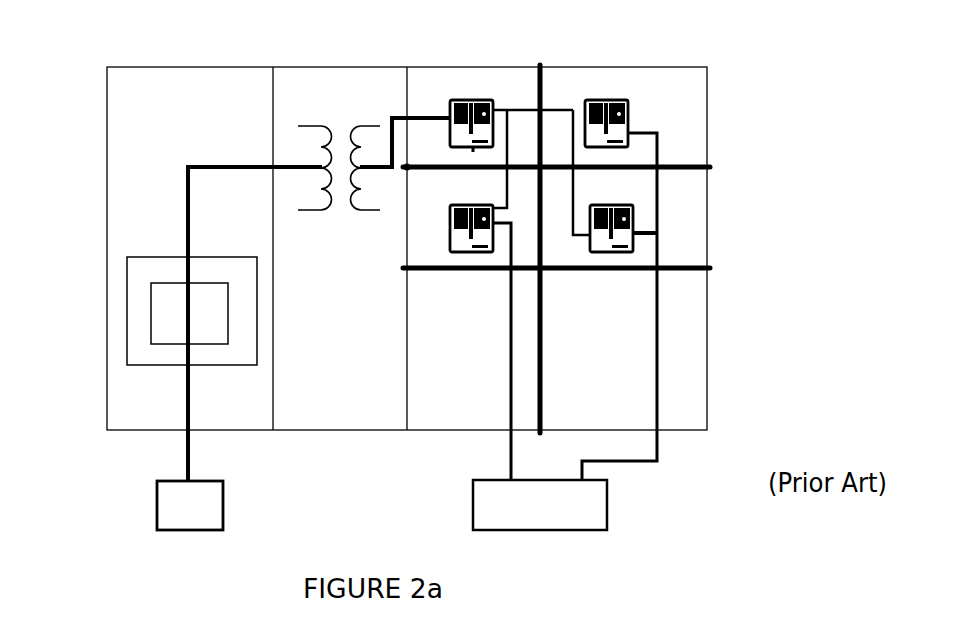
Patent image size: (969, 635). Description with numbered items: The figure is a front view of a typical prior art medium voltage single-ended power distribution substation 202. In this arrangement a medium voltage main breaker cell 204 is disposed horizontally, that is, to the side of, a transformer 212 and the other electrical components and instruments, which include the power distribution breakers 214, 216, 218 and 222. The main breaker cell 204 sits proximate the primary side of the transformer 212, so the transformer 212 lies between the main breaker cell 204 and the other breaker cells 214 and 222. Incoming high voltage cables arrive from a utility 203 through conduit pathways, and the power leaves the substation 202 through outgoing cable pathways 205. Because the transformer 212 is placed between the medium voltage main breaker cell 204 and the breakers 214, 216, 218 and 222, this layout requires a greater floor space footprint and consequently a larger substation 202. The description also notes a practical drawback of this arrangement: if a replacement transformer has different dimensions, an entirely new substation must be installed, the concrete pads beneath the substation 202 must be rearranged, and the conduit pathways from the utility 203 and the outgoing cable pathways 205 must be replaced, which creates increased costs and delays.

The single-ended substation 202 is at (830, 428).
The utility 203 is at (172, 508).
The medium voltage main breaker cell 204 is at (133, 300).
The outgoing cable pathways 205 is at (592, 513).
The transformer 212 is at (340, 125).
The power distribution breaker 214 is at (473, 100).
The power distribution breaker 216 is at (628, 117).
The power distribution breaker 218 is at (632, 217).
The power distribution breaker 222 is at (458, 250).